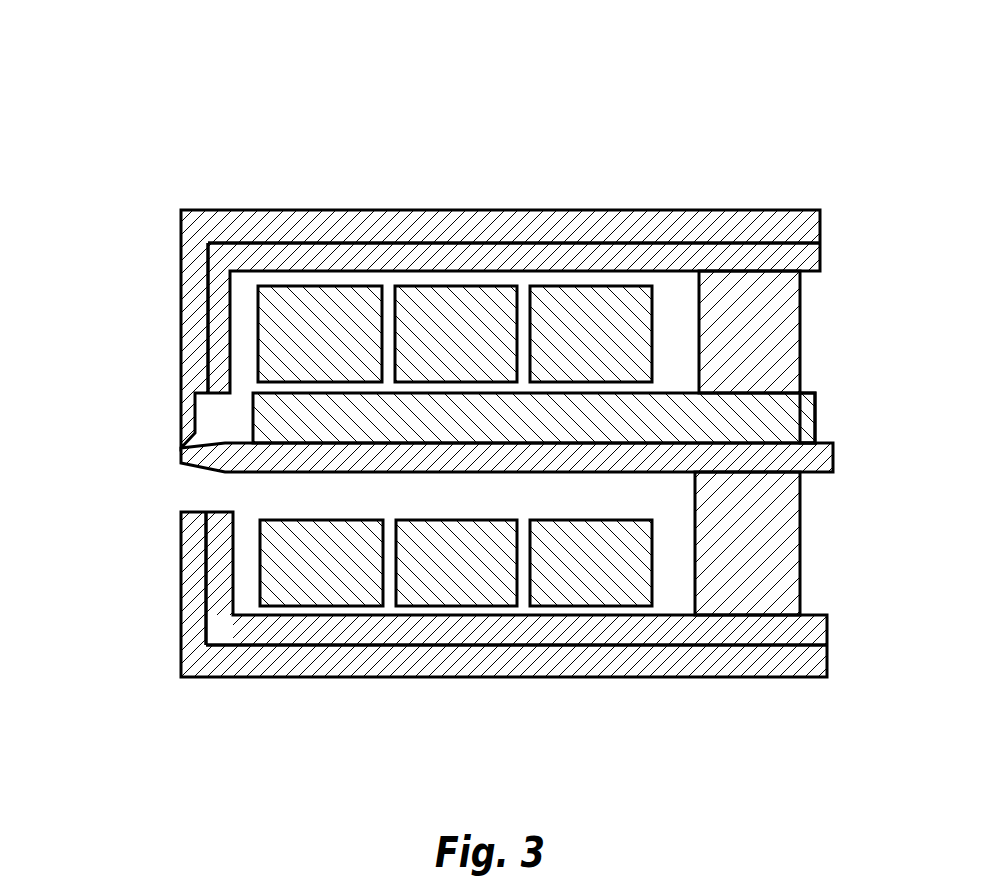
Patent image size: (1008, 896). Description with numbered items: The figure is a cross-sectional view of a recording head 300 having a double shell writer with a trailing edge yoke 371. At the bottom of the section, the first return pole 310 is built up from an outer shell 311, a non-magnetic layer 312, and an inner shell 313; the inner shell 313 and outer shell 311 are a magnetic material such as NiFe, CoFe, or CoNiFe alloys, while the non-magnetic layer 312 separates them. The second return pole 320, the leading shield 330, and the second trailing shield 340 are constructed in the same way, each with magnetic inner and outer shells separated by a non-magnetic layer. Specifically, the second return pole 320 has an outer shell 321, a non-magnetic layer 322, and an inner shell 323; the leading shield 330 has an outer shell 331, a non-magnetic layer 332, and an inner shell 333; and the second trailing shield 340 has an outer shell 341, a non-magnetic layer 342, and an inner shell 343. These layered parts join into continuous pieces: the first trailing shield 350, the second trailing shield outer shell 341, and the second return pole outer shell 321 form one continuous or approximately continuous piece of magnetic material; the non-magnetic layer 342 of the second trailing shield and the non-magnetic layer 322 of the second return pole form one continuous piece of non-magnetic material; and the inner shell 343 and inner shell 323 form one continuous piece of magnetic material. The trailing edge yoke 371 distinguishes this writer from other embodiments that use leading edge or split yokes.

The recording head 300 is at (700, 115).
The first return pole 310 is at (337, 680).
The outer shell 311 is at (417, 670).
The non-magnetic layer 312 is at (490, 652).
The inner shell 313 is at (555, 633).
The second return pole 320 is at (380, 208).
The outer shell 321 is at (485, 223).
The non-magnetic layer 322 is at (533, 240).
The inner shell 323 is at (567, 260).
The leading shield 330 is at (177, 573).
The outer shell 331 is at (185, 590).
The non-magnetic layer 332 is at (203, 620).
The inner shell 333 is at (218, 598).
The second trailing shield 340 is at (176, 344).
The outer shell 341 is at (187, 288).
The non-magnetic layer 342 is at (203, 267).
The inner shell 343 is at (215, 287).
The first trailing shield 350 is at (183, 431).
The trailing edge yoke 371 is at (818, 418).